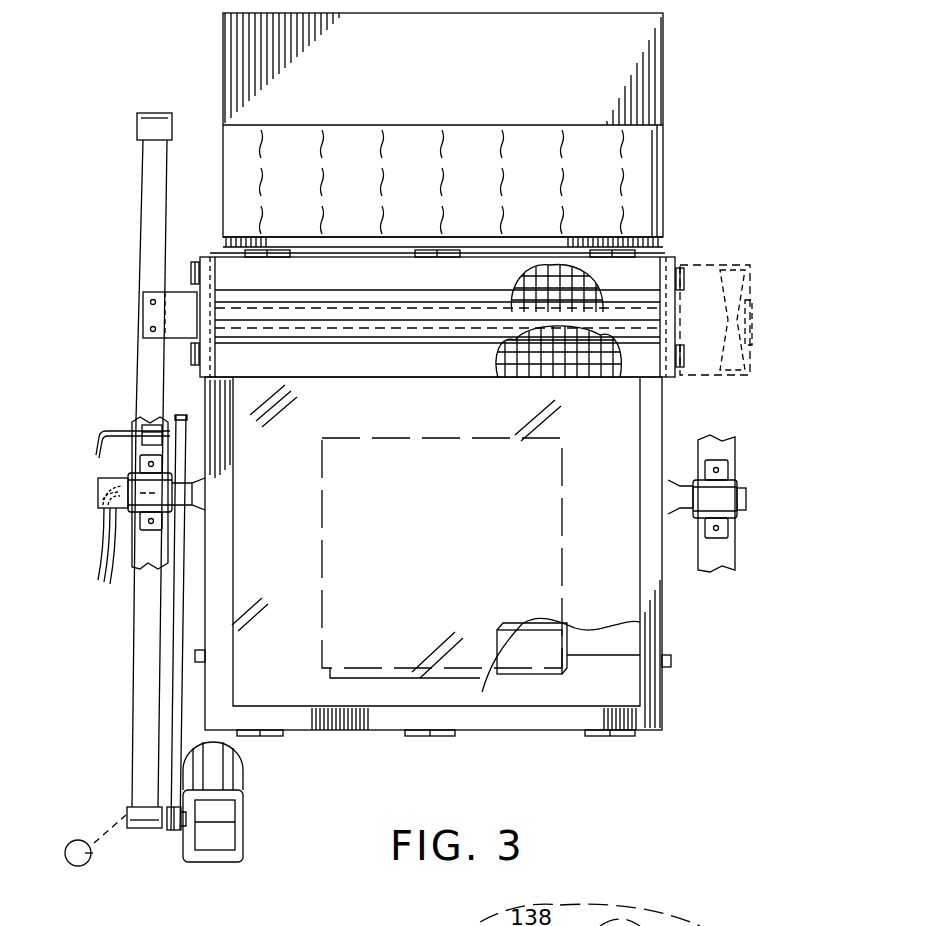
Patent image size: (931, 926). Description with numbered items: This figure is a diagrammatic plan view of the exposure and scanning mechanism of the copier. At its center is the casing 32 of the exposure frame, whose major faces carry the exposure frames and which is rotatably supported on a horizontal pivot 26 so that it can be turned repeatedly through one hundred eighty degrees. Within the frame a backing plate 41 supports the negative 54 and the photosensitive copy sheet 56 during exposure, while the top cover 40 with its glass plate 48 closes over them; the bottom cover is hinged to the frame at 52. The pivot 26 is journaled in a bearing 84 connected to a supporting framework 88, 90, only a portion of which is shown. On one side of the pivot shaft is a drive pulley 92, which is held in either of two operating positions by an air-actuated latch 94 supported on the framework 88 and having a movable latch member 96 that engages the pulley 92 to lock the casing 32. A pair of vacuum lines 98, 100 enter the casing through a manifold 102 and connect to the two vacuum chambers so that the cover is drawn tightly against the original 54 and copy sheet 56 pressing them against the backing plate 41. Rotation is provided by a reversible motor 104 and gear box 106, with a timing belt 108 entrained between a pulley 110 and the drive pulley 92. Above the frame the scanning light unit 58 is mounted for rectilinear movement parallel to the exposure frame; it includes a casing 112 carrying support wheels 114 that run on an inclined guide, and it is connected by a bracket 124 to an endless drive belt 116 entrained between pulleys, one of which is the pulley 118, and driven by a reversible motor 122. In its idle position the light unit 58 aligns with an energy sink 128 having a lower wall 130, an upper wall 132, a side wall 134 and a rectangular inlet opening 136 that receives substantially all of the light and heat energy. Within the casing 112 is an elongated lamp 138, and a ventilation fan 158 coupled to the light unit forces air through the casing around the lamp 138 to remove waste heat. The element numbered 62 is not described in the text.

The horizontal pivot 26 is at (746, 500).
The casing 32 is at (676, 602).
The top cover 40 is at (665, 437).
The backing plate 41 is at (620, 645).
The glass plate 48 is at (449, 543).
The hinge 52 is at (600, 737).
The negative 54 is at (520, 652).
The photosensitive copy sheet 56 is at (566, 676).
The scanning light unit 58 is at (344, 354).
The wire 62 is at (98, 482).
The bearing 84 is at (723, 495).
The supporting framework 88 is at (140, 575).
The supporting framework 90 is at (725, 545).
The drive pulley 92 is at (190, 541).
The air-actuated latch 94 is at (148, 428).
The movable latch member 96 is at (165, 476).
The vacuum line 98 is at (102, 524).
The vacuum line 100 is at (112, 545).
The manifold 102 is at (98, 500).
The reversible motor 104 is at (245, 772).
The gear box 106 is at (228, 838).
The timing belt 108 is at (177, 697).
The pulley 110 is at (172, 830).
The casing 112 is at (425, 378).
The support wheels 114 is at (192, 268).
The endless drive belt 116 is at (142, 637).
The pulley 118 is at (168, 135).
The reversible motor 122 is at (78, 866).
The bracket 124 is at (182, 300).
The energy sink 128 is at (680, 94).
The lower wall 130 is at (640, 190).
The upper wall 132 is at (478, 85).
The side wall 134 is at (650, 8).
The inlet opening 136 is at (338, 128).
The elongated lamp 138 is at (498, 318).
The ventilation fan 158 is at (750, 292).